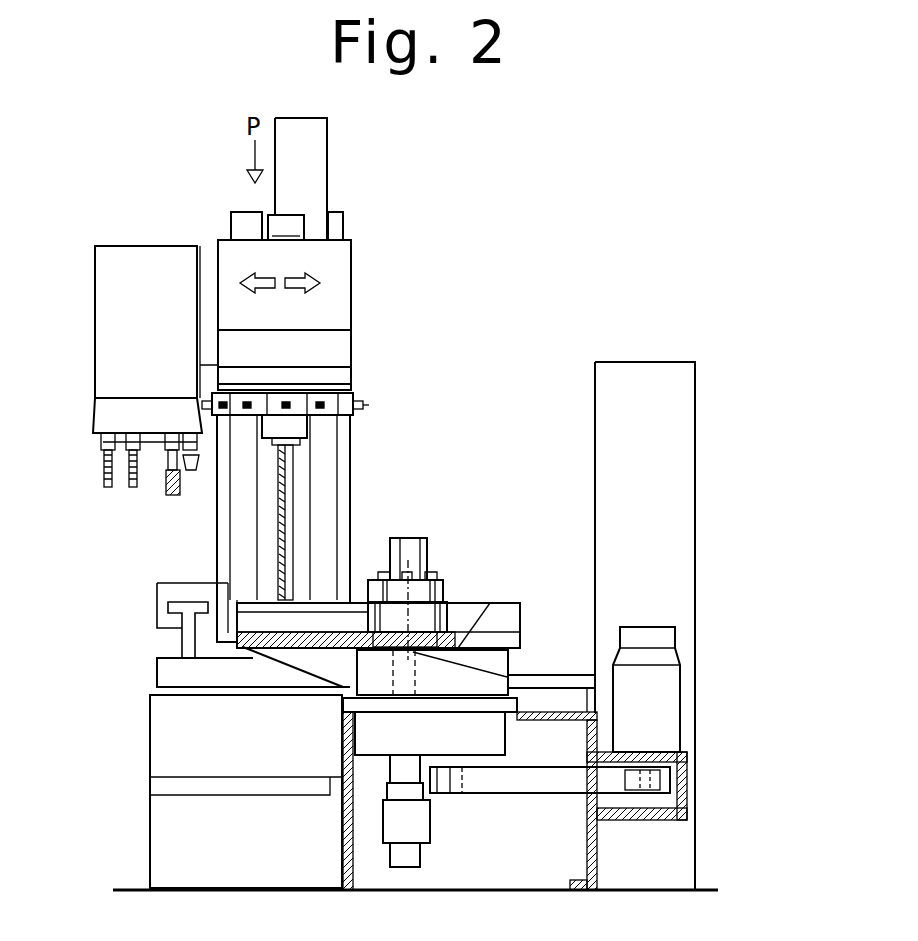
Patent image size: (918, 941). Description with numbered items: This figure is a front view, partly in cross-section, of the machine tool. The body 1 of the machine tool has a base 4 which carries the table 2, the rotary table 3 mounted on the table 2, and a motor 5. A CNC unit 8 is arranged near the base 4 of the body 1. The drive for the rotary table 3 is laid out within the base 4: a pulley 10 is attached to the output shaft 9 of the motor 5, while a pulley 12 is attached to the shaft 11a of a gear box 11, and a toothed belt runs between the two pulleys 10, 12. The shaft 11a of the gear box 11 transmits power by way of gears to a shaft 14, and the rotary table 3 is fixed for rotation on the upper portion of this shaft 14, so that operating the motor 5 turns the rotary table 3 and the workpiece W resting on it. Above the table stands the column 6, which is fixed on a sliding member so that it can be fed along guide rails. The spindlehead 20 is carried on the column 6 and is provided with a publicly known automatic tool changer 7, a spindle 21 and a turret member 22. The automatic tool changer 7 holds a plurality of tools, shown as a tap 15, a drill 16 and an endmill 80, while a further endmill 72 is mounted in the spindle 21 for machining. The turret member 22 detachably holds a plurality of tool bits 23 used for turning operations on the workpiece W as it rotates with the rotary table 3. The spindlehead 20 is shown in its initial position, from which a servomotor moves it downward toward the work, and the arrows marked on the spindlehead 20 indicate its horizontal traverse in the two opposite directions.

The body 1 is at (322, 444).
The table 2 is at (522, 630).
The rotary table 3 is at (447, 600).
The base 4 is at (150, 795).
The motor 5 is at (672, 683).
The column 6 is at (352, 508).
The automatic tool changer 7 is at (145, 255).
The CNC unit 8 is at (635, 362).
The output shaft 9 is at (645, 760).
The pulley 10 is at (660, 783).
The gear box 11 is at (507, 742).
The shaft 11a is at (460, 770).
The pulley 12 is at (472, 780).
The shaft 14 is at (417, 667).
The tap 15 is at (104, 478).
The drill 16 is at (128, 490).
The spindlehead 20 is at (352, 270).
The spindle 21 is at (277, 425).
The turret member 22 is at (355, 393).
The tool bits 23 is at (365, 405).
The endmill 72 is at (275, 463).
The endmill 80 is at (172, 488).
The workpiece W is at (430, 545).